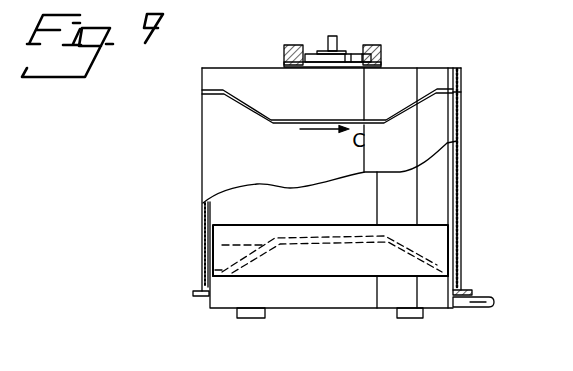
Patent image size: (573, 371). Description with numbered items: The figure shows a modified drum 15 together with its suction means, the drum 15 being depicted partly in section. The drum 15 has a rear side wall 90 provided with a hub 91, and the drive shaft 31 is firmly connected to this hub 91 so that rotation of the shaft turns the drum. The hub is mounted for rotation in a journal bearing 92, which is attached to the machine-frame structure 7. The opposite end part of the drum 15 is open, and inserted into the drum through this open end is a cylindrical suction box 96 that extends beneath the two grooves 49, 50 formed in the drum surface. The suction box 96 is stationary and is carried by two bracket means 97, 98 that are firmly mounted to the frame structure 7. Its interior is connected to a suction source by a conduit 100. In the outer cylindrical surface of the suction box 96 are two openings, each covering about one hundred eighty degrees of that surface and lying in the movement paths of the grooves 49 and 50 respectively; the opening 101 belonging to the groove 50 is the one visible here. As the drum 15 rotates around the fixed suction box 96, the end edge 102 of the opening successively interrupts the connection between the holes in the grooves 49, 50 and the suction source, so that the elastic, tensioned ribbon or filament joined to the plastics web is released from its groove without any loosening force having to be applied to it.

The rear side wall 90 is at (252, 67).
The journal bearing 92 is at (315, 56).
The drive shaft 31 is at (333, 36).
The hub 91 is at (342, 53).
The machine-frame structure 7 is at (377, 44).
The groove 49 is at (380, 118).
The drum 15 is at (457, 110).
The suction box 96 is at (447, 197).
The groove 50 is at (222, 245).
The opening 101 is at (445, 238).
The end edge 102 is at (445, 255).
The bracket means 97 is at (247, 317).
The bracket means 98 is at (410, 313).
The conduit 100 is at (477, 306).